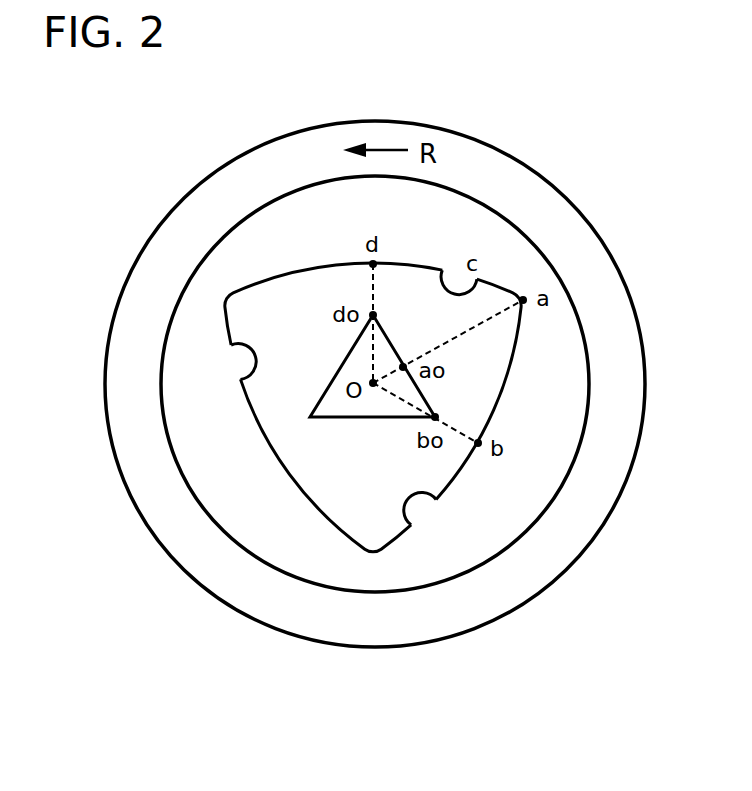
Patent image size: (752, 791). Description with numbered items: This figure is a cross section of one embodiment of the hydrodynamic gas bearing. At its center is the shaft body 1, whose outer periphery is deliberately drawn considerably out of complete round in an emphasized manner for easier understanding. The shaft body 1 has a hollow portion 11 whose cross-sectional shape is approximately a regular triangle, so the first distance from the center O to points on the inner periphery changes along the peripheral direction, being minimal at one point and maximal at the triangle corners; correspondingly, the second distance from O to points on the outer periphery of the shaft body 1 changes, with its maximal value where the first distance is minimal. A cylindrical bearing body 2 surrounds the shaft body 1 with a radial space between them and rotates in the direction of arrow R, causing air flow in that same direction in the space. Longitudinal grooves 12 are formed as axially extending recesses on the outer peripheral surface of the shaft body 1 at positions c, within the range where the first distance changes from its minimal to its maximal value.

The shaft body 1 is at (498, 408).
The bearing body 2 is at (640, 437).
The hollow portion 11 is at (391, 343).
The longitudinal groove 12 is at (452, 267).